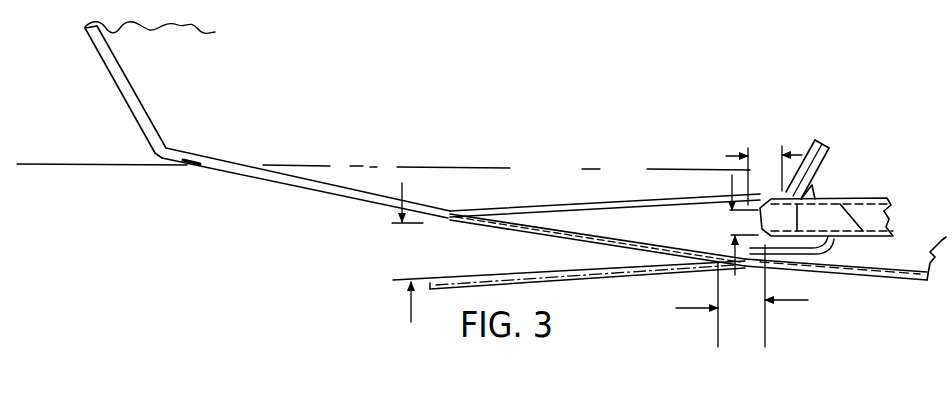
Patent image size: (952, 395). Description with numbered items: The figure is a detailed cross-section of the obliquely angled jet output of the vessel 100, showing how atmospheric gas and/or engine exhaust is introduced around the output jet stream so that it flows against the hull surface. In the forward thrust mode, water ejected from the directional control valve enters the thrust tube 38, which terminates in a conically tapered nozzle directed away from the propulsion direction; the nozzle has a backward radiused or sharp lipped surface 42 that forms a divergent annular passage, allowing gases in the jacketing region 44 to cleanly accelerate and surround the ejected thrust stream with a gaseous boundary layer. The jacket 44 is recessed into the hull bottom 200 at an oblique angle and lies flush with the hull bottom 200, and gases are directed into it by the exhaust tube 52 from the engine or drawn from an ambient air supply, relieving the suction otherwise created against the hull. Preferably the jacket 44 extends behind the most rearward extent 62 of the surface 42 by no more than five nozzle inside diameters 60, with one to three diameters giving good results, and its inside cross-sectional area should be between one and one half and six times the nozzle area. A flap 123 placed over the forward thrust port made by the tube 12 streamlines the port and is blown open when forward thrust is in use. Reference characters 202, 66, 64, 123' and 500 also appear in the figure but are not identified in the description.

The vessel 100 is at (234, 215).
The upright tube member 202 is at (130, 110).
The hull bottom 200 is at (337, 198).
The tube 12 is at (606, 200).
The jacketing region 44 is at (567, 221).
The flat bar 66 is at (569, 284).
The flap 123 is at (585, 285).
The offset centerline 123' is at (619, 308).
The backward radiused or sharp lipped surface 42 is at (750, 207).
The exhaust tube 52 is at (816, 168).
The offset dimension 64 is at (764, 174).
The nozzle inside diameter 60 is at (727, 225).
The most rearward extent of surface 62 is at (742, 296).
The junction 500 is at (728, 266).
The thrust tube 38 is at (873, 237).